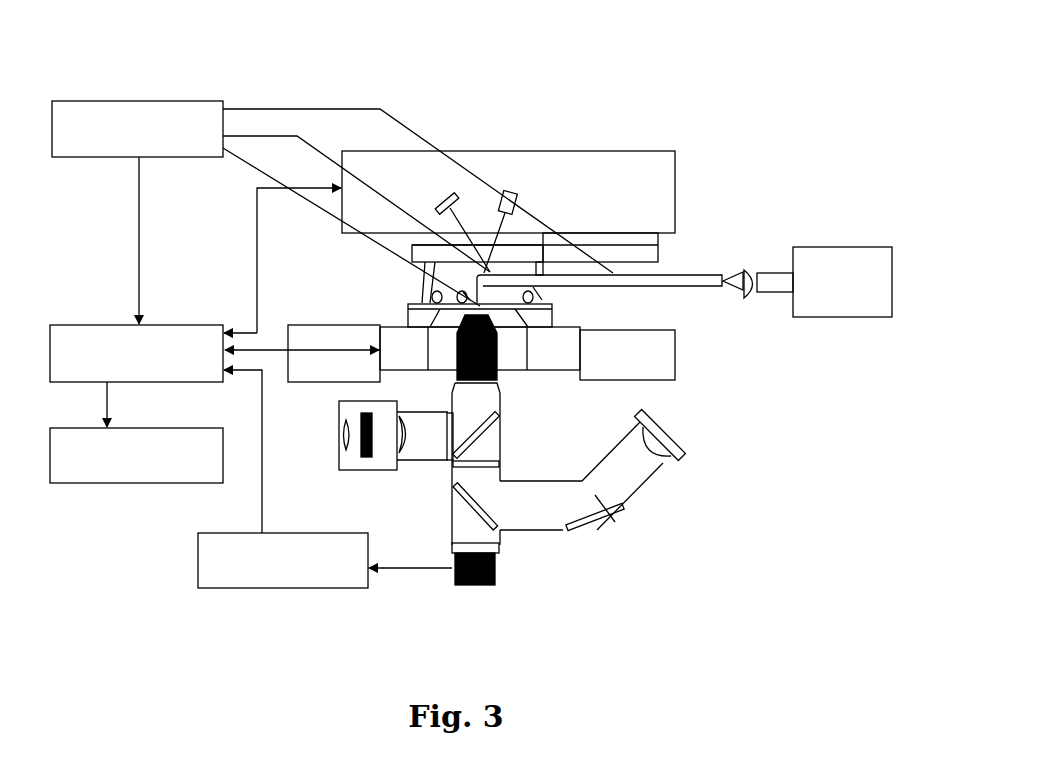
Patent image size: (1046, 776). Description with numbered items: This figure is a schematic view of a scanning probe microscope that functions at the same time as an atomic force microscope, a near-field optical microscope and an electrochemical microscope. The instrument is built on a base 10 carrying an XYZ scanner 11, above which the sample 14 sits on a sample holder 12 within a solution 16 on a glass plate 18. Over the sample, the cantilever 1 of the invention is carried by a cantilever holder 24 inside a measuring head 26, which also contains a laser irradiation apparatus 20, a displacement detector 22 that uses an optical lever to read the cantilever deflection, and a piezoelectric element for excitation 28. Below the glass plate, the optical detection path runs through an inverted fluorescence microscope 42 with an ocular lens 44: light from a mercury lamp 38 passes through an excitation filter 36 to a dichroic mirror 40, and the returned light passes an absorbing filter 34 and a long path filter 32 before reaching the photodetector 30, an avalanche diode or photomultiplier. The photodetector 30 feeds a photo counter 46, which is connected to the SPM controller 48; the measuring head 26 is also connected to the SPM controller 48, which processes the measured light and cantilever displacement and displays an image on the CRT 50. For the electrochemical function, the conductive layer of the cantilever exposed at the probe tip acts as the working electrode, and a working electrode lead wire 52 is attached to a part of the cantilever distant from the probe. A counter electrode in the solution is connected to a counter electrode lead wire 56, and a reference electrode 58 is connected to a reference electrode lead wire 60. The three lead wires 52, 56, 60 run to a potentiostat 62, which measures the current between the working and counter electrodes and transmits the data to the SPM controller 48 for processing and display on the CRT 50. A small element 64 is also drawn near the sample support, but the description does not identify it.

The cantilever 1 is at (586, 281).
The base 10 is at (657, 367).
The XYZ scanner 11 is at (395, 341).
The sample holder 12 is at (545, 323).
The sample 14 is at (488, 315).
The solution 16 is at (445, 277).
The glass plate 18 is at (415, 250).
The laser irradiation apparatus 20 is at (807, 282).
The displacement detector 22 is at (443, 200).
The cantilever holder 24 is at (648, 250).
The measuring head 26 is at (653, 183).
The piezoelectric element for excitation 28 is at (550, 270).
The photodetector 30 is at (483, 585).
The long path filter 32 is at (497, 553).
The absorbing filter 34 is at (457, 463).
The excitation filter 36 is at (448, 433).
The mercury lamp 38 is at (353, 458).
The dichroic mirror 40 is at (488, 432).
The inverted fluorescence microscope 42 is at (617, 512).
The ocular lens 44 is at (660, 458).
The photo counter 46 is at (283, 560).
The SPM controller 48 is at (136, 353).
The CRT 50 is at (136, 455).
The working electrode lead wire 52 is at (380, 109).
The counter electrode lead wire 56 is at (265, 136).
The reference electrode 58 is at (464, 292).
The reference electrode lead wire 60 is at (253, 166).
The potentiostat 62 is at (137, 129).
The roller 64 is at (534, 297).